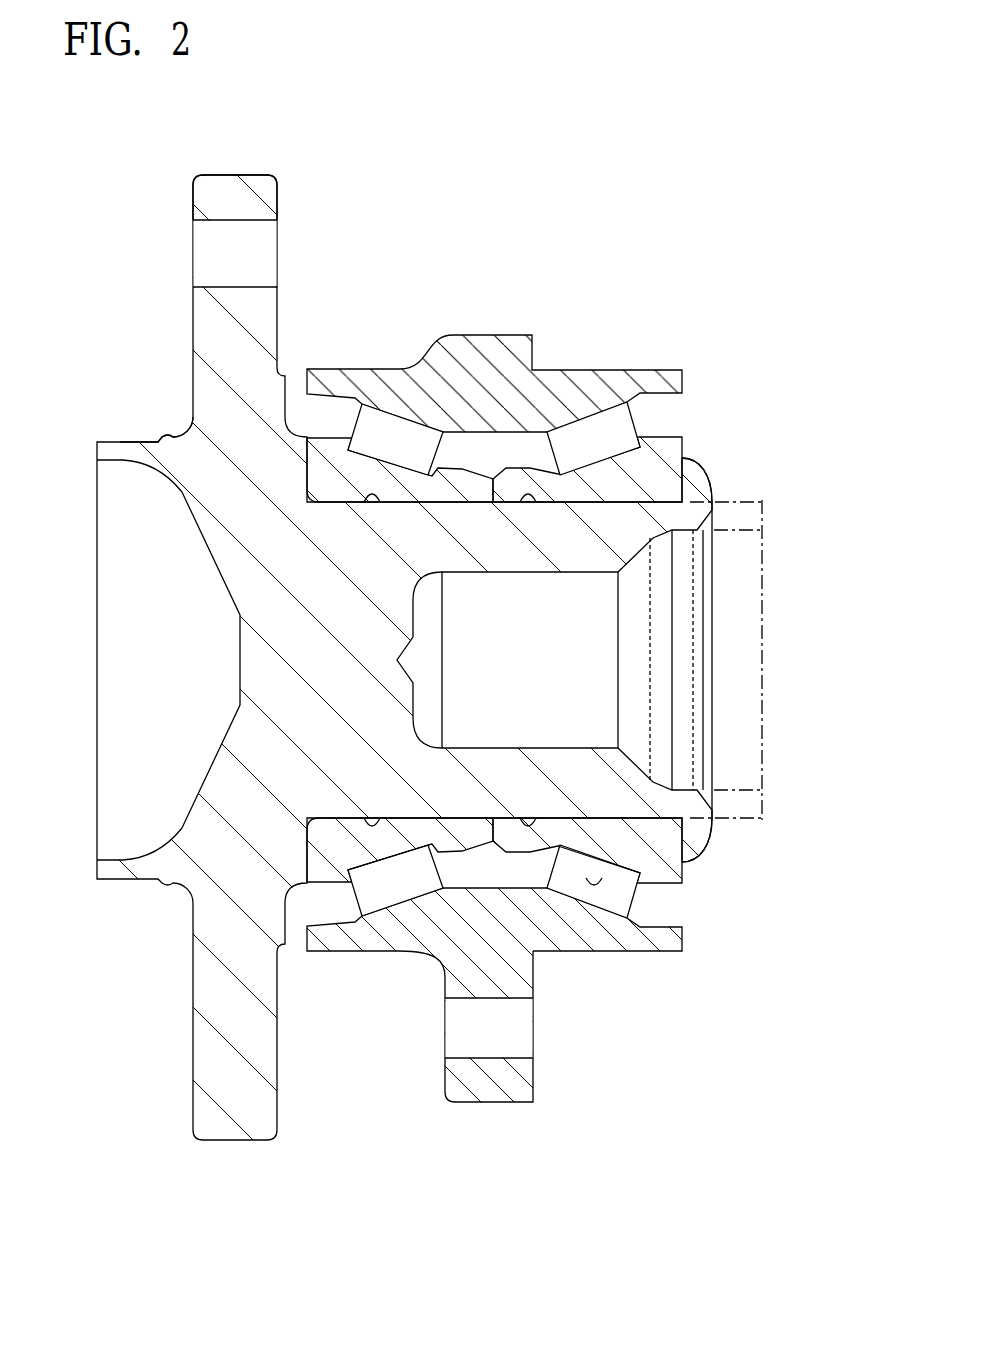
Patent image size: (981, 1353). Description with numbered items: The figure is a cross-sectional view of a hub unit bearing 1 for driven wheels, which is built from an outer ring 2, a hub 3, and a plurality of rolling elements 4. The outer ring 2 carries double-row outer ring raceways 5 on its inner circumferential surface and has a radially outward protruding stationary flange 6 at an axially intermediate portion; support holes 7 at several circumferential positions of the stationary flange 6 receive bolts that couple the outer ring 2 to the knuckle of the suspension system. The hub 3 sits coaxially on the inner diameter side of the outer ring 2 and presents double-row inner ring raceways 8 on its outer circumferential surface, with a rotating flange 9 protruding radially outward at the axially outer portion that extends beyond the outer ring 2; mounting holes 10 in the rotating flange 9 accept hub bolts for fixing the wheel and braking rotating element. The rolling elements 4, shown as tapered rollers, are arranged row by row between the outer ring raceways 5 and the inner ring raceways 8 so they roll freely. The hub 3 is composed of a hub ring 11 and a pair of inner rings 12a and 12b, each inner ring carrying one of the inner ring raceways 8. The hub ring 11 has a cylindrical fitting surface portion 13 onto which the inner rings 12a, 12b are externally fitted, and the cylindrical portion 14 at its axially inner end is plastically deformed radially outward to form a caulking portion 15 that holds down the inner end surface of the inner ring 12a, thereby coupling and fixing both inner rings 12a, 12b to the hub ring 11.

The hub unit bearing 1 is at (625, 262).
The outer ring 2 is at (493, 387).
The hub 3 is at (94, 454).
The rolling elements 4 is at (385, 427).
The outer ring raceways 5 is at (372, 900).
The stationary flange 6 is at (495, 1102).
The support holes 7 is at (502, 1058).
The inner ring raceways 8 is at (340, 850).
The rotating flange 9 is at (233, 200).
The mounting holes 10 is at (216, 224).
The hub ring 11 is at (165, 432).
The inner ring 12a is at (660, 440).
The inner ring 12b is at (327, 481).
The fitting surface portion 13 is at (515, 492).
The cylindrical portion 14 is at (738, 500).
The caulking portion 15 is at (700, 478).